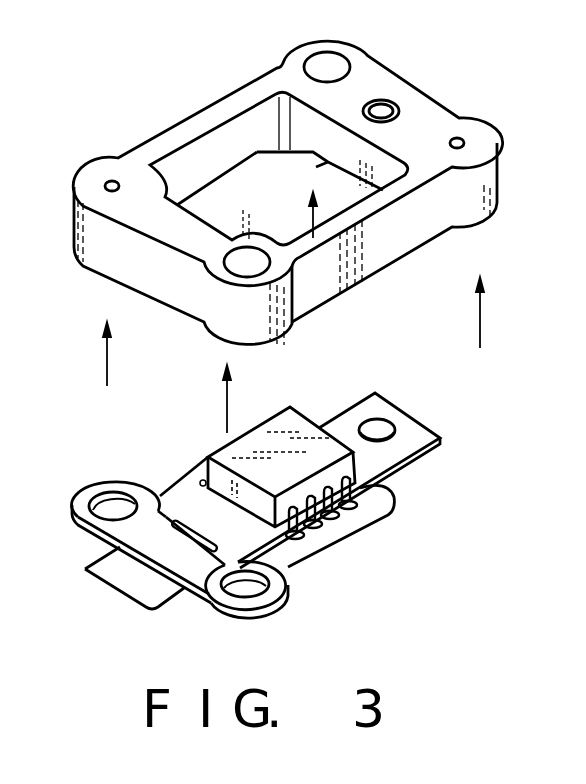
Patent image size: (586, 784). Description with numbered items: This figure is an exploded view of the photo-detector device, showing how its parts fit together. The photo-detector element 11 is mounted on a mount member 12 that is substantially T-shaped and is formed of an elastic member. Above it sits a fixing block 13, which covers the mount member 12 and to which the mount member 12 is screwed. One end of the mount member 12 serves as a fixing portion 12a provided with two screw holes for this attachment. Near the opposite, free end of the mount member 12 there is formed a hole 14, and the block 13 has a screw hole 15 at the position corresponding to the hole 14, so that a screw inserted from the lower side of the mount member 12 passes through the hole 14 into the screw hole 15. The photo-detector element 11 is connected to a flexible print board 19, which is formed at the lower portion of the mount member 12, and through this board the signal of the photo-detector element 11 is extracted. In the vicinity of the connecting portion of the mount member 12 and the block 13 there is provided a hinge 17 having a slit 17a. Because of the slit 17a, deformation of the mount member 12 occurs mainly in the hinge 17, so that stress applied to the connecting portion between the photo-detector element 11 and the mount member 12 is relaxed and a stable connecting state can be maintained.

The photo-detector element 11 is at (297, 427).
The mount member 12 is at (417, 433).
The fixing portion 12a is at (77, 497).
The fixing block 13 is at (407, 240).
The hole 14 is at (383, 420).
The screw hole 15 is at (389, 103).
The hinge 17 is at (213, 563).
The slit 17a is at (178, 526).
The flexible print board 19 is at (350, 518).